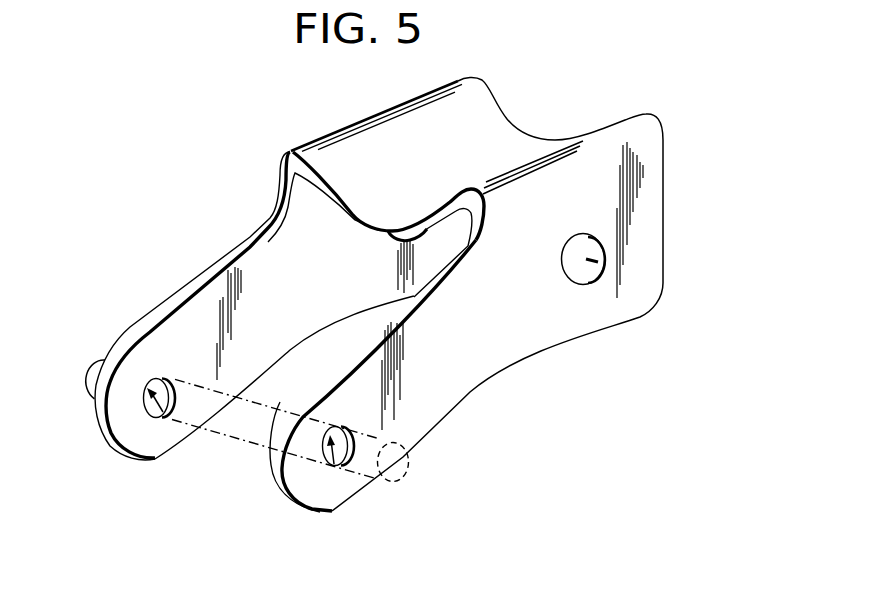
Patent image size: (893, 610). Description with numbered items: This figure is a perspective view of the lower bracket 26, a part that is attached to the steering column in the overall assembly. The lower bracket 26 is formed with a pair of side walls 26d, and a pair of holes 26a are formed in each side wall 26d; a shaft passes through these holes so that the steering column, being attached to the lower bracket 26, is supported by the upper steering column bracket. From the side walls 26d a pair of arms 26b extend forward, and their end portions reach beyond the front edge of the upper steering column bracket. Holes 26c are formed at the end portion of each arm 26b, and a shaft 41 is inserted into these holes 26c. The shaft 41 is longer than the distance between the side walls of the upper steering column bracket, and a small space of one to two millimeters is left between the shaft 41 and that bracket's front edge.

The lower bracket 26 is at (427, 322).
The hole 26a is at (583, 258).
The arm 26b is at (138, 326).
The hole 26c is at (165, 418).
The side wall 26d is at (363, 250).
The shaft 41 is at (407, 477).